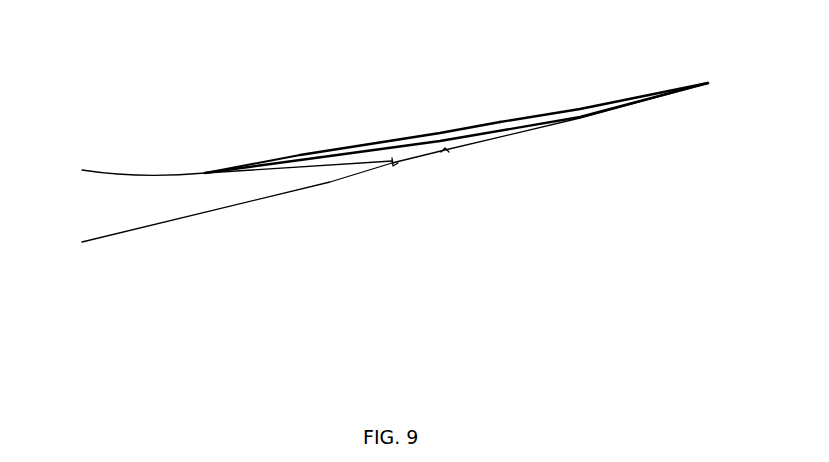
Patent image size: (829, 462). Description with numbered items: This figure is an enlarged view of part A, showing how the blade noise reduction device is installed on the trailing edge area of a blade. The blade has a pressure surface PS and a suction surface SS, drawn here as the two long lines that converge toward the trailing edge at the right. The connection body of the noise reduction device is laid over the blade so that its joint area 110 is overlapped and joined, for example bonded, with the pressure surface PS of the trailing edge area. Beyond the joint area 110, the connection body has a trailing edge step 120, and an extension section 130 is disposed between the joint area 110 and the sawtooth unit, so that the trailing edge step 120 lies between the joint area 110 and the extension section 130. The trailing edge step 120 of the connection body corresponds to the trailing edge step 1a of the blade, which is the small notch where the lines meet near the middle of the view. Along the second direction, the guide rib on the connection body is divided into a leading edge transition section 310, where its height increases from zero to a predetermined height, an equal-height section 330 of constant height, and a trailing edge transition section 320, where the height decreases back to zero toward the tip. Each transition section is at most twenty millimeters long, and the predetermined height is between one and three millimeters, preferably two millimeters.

The pressure surface PS is at (110, 170).
The suction surface SS is at (158, 225).
The leading edge transition section 310 is at (238, 162).
The trailing edge transition section 320 is at (673, 85).
The equal-height section 330 is at (343, 147).
The joint area 110 is at (362, 155).
The trailing edge step 120 is at (392, 161).
The extension section 130 is at (445, 150).
The trailing edge step 1a is at (395, 163).
The part A is at (367, 352).